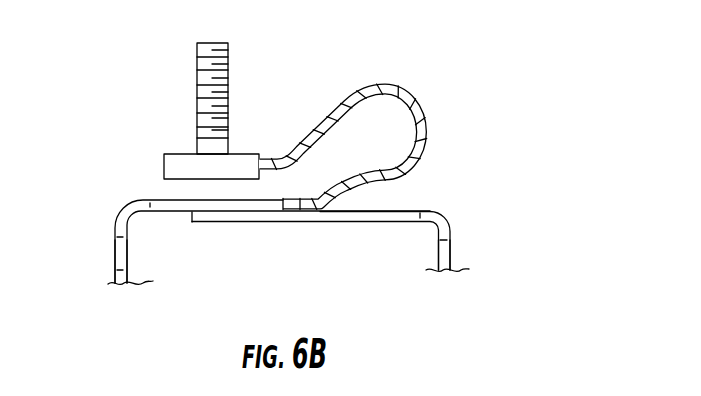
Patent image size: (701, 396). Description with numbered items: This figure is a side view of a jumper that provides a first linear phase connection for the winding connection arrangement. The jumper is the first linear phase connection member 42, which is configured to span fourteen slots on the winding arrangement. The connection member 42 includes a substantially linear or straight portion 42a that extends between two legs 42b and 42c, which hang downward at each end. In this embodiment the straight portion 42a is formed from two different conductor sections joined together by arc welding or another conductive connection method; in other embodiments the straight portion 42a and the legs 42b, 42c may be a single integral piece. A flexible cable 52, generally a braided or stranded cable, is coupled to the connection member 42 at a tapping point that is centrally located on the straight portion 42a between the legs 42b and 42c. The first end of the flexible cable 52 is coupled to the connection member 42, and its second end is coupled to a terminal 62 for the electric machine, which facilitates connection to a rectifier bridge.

The first linear phase connection member 42 is at (279, 222).
The straight portion 42a is at (262, 222).
The leg 42b is at (115, 250).
The leg 42c is at (452, 248).
The flexible cable 52 is at (410, 91).
The terminal 62 is at (197, 93).